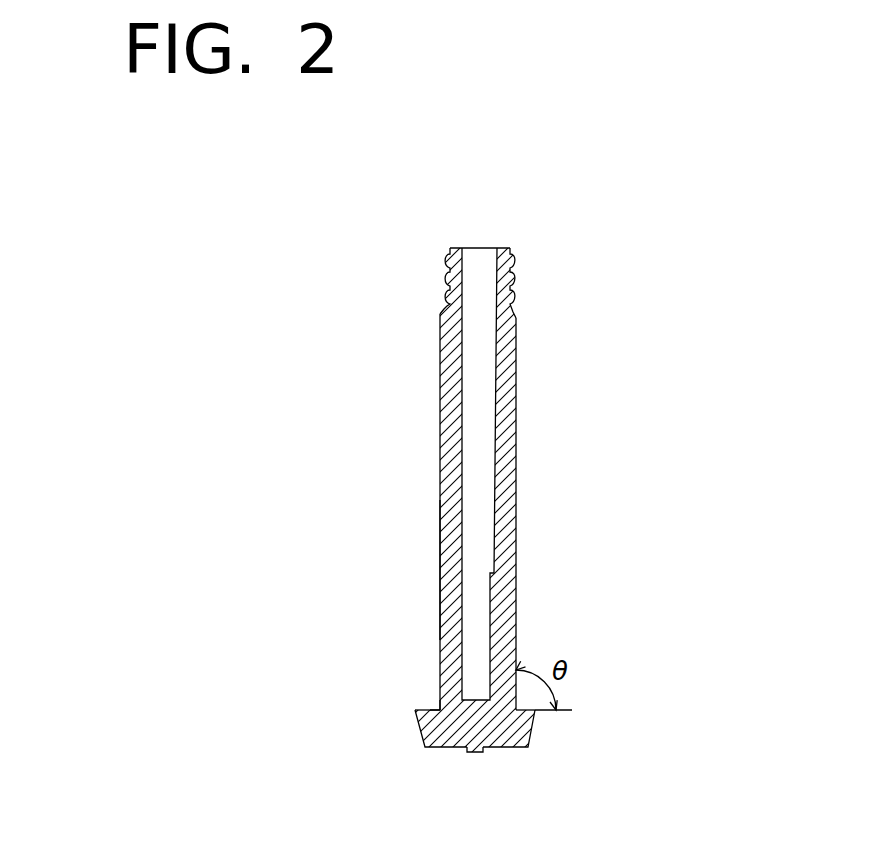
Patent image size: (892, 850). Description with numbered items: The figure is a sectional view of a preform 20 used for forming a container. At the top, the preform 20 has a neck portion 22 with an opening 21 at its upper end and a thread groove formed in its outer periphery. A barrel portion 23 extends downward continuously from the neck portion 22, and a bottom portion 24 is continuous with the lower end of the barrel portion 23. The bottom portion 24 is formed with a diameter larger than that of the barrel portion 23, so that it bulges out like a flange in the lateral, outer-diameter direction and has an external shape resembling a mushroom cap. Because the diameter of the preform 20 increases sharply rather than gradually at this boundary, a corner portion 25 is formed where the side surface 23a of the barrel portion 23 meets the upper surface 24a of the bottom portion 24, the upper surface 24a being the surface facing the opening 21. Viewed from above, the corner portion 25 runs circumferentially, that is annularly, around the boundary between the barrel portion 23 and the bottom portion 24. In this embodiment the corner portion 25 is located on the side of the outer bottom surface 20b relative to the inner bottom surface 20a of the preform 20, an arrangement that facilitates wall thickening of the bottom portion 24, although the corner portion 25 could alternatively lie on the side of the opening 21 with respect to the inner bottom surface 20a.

The preform 20 is at (570, 228).
The opening 21 is at (485, 260).
The neck portion 22 is at (448, 265).
The barrel portion 23 is at (505, 430).
The side surface of the barrel portion 23a is at (439, 590).
The inner bottom surface 20a is at (475, 698).
The corner portion 25 is at (439, 705).
The upper surface of the bottom portion 24a is at (424, 706).
The bottom portion 24 is at (525, 745).
The outer bottom surface 20b is at (455, 750).